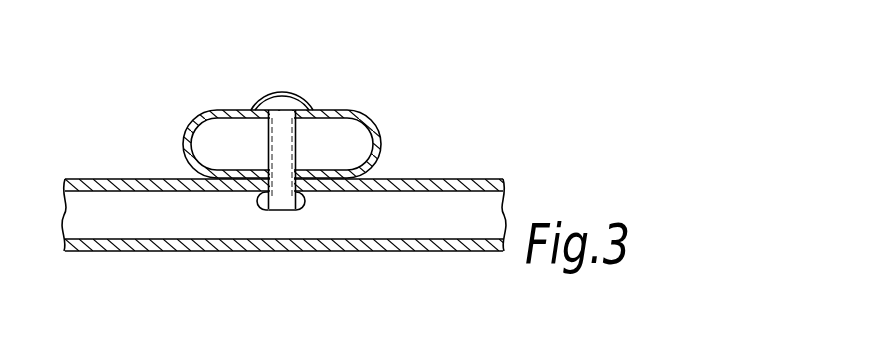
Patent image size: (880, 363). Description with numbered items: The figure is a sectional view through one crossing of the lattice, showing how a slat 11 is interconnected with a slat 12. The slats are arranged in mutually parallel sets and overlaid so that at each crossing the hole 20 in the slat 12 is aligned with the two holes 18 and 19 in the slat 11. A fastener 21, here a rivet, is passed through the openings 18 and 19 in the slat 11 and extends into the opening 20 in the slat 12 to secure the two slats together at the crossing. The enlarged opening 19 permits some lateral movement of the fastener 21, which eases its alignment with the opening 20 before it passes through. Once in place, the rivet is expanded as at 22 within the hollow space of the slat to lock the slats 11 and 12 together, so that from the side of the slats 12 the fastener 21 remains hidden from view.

The slat 11 is at (384, 117).
The slat 12 is at (393, 250).
The hole 18 is at (317, 166).
The enlarged opening 19 is at (295, 163).
The hole 20 is at (269, 204).
The fastener 21 is at (263, 98).
The expanded portion of the rivet 22 is at (294, 212).